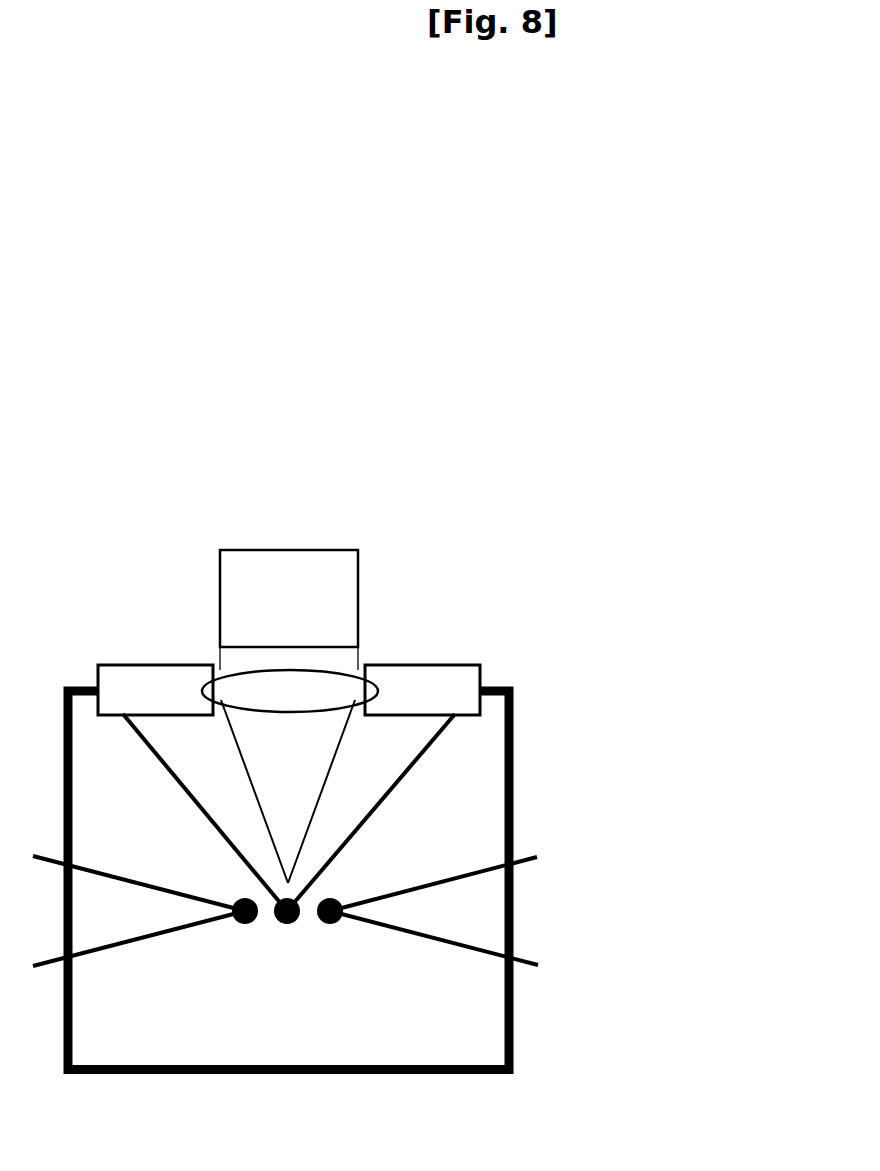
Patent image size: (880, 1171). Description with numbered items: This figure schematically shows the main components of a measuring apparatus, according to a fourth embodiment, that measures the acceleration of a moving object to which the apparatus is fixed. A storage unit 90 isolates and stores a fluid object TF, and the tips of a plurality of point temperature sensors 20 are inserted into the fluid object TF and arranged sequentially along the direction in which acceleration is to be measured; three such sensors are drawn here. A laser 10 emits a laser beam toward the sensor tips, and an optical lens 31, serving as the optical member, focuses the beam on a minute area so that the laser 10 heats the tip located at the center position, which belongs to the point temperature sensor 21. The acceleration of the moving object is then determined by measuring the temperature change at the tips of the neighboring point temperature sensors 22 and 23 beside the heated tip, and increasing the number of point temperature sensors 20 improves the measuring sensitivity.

The laser 10 is at (358, 594).
The optical lens 31 is at (233, 680).
The point temperature sensors 20 is at (353, 950).
The point temperature sensor 21 is at (481, 873).
The point temperature sensor 22 is at (185, 925).
The point temperature sensor 23 is at (463, 947).
The storage unit 90 is at (450, 1074).
The fluid object TF is at (193, 1037).